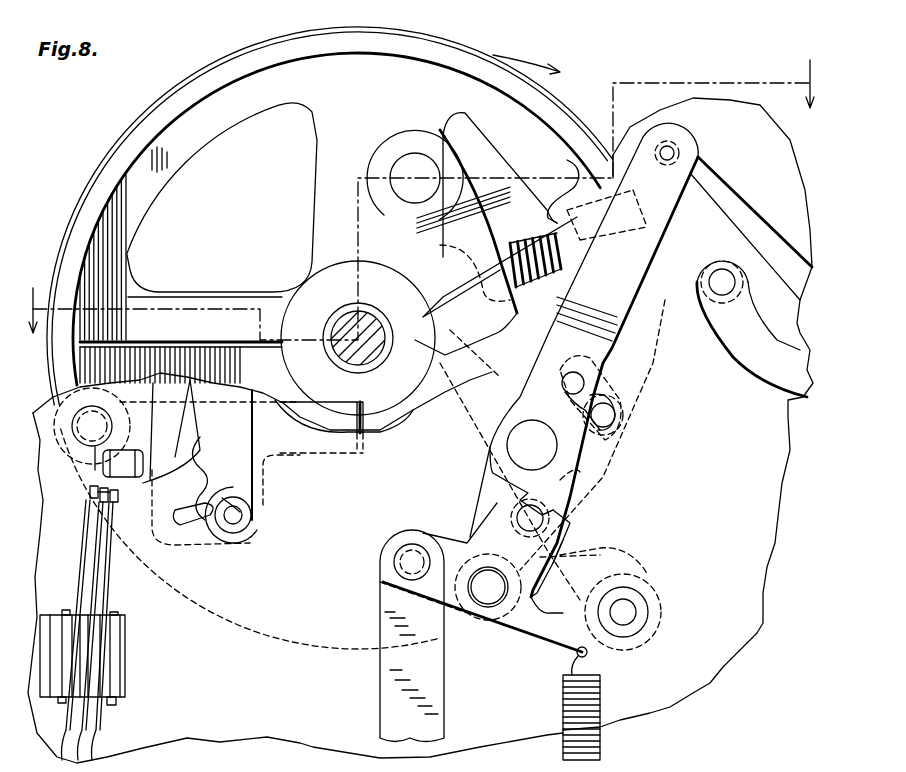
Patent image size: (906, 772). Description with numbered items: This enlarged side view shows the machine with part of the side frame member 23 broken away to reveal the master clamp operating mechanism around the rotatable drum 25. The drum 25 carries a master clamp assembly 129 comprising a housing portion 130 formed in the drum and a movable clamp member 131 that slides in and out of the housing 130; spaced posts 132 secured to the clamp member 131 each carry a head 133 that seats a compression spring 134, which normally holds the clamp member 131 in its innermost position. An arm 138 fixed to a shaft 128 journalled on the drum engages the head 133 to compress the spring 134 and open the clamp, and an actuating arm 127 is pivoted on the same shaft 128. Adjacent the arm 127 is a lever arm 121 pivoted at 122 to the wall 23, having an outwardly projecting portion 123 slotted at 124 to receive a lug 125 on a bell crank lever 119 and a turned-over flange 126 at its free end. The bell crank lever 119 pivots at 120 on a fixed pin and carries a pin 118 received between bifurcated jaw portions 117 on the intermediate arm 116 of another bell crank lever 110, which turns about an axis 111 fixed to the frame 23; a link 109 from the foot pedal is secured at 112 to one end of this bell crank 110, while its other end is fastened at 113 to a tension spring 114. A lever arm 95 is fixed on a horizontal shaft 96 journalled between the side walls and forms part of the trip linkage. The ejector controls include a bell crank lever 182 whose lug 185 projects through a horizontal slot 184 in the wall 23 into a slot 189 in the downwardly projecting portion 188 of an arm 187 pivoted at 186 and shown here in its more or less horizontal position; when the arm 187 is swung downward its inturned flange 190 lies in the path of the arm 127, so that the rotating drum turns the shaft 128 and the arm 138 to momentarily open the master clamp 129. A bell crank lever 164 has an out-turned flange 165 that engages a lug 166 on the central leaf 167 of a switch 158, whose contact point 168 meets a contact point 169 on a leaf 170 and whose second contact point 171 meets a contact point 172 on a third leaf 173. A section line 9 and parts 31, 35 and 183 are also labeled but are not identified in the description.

The section line 9 is at (421, 190).
The side frame member 23 is at (723, 642).
The rotatable drum 25 is at (128, 152).
The shaft 31 is at (340, 318).
The flange 35 is at (253, 42).
The lever arm 95 is at (778, 385).
The horizontally disposed shaft 96 is at (722, 270).
The link 109 is at (390, 682).
The bell crank lever 110 is at (455, 617).
The axis 111 is at (492, 598).
The securing point 112 is at (404, 563).
The fastening point 113 is at (587, 653).
The tension spring 114 is at (563, 713).
The intermediate arm 116 is at (537, 560).
The bifurcated jaw portions 117 is at (553, 523).
The pin 118 is at (568, 503).
The bell crank lever 119 is at (464, 455).
The pivot 120 is at (520, 455).
The lever arm 121 is at (640, 553).
The pivot 122 is at (632, 606).
The outwardly projecting portion 123 is at (615, 430).
The slot 124 is at (613, 410).
The lug 125 is at (570, 377).
The turned-over flange 126 is at (432, 305).
The actuating arm 127 is at (482, 228).
The shaft 128 is at (408, 160).
The master clamp assembly 129 is at (616, 256).
The housing portion 130 is at (567, 160).
The movable clamp member 131 is at (630, 182).
The post 132 is at (590, 311).
The head 133 is at (513, 297).
The compression spring 134 is at (520, 240).
The arm 138 is at (470, 210).
The switch 158 is at (134, 670).
The bell crank lever 164 is at (177, 383).
The out-turned flange 165 is at (150, 447).
The knob or lug 166 is at (95, 455).
The central leaf 167 is at (88, 565).
The contact point 168 is at (98, 500).
The contact point 169 is at (90, 492).
The leaf 170 is at (96, 588).
The second contact point 171 is at (112, 500).
The contact point 172 is at (105, 505).
The third leaf 173 is at (108, 572).
The bell crank lever 182 is at (247, 477).
The spring 183 is at (197, 470).
The horizontal slot 184 is at (205, 525).
The lug 185 is at (247, 513).
The pivot 186 is at (100, 423).
The arm 187 is at (293, 407).
The downwardly projecting portion 188 is at (250, 523).
The slot 189 is at (222, 498).
The inturned flange portion 190 is at (368, 403).